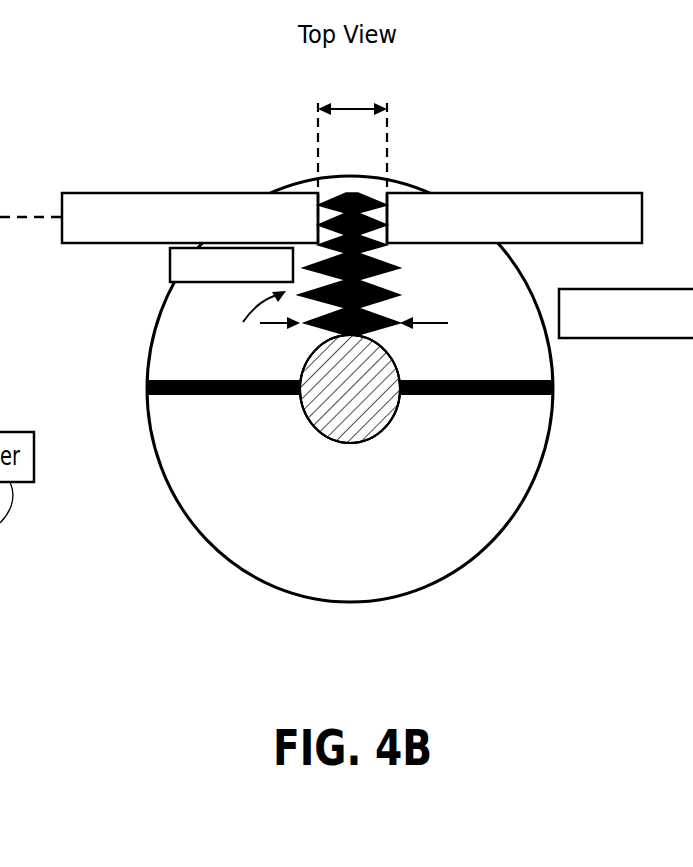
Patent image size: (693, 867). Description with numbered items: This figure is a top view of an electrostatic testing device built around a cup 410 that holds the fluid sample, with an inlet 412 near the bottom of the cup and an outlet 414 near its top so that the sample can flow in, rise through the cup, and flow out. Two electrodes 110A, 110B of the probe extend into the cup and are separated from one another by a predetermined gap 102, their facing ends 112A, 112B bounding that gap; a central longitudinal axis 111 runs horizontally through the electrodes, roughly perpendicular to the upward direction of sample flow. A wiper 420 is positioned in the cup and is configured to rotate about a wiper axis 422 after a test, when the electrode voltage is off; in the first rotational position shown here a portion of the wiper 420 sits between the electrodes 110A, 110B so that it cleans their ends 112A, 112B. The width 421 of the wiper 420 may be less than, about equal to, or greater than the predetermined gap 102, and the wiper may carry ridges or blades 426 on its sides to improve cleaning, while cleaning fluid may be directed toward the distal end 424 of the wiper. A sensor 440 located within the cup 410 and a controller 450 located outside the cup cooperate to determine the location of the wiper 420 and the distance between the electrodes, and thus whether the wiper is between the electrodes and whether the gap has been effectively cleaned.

The predetermined gap 102 is at (352, 106).
The electrode 110A is at (62, 215).
The electrode 110B is at (640, 207).
The central longitudinal axis 111 is at (22, 224).
The end of electrode 112A is at (330, 197).
The end of electrode 112B is at (378, 200).
The cup 410 is at (205, 535).
The inlet 412 is at (363, 442).
The outlet 414 is at (350, 389).
The wiper 420 is at (254, 320).
The width of the wiper 421 is at (272, 328).
The wiper axis 422 is at (512, 380).
The distal end of the wiper 424 is at (357, 193).
The ridges or blades 426 is at (402, 296).
The sensor 440 is at (170, 263).
The controller 450 is at (681, 340).